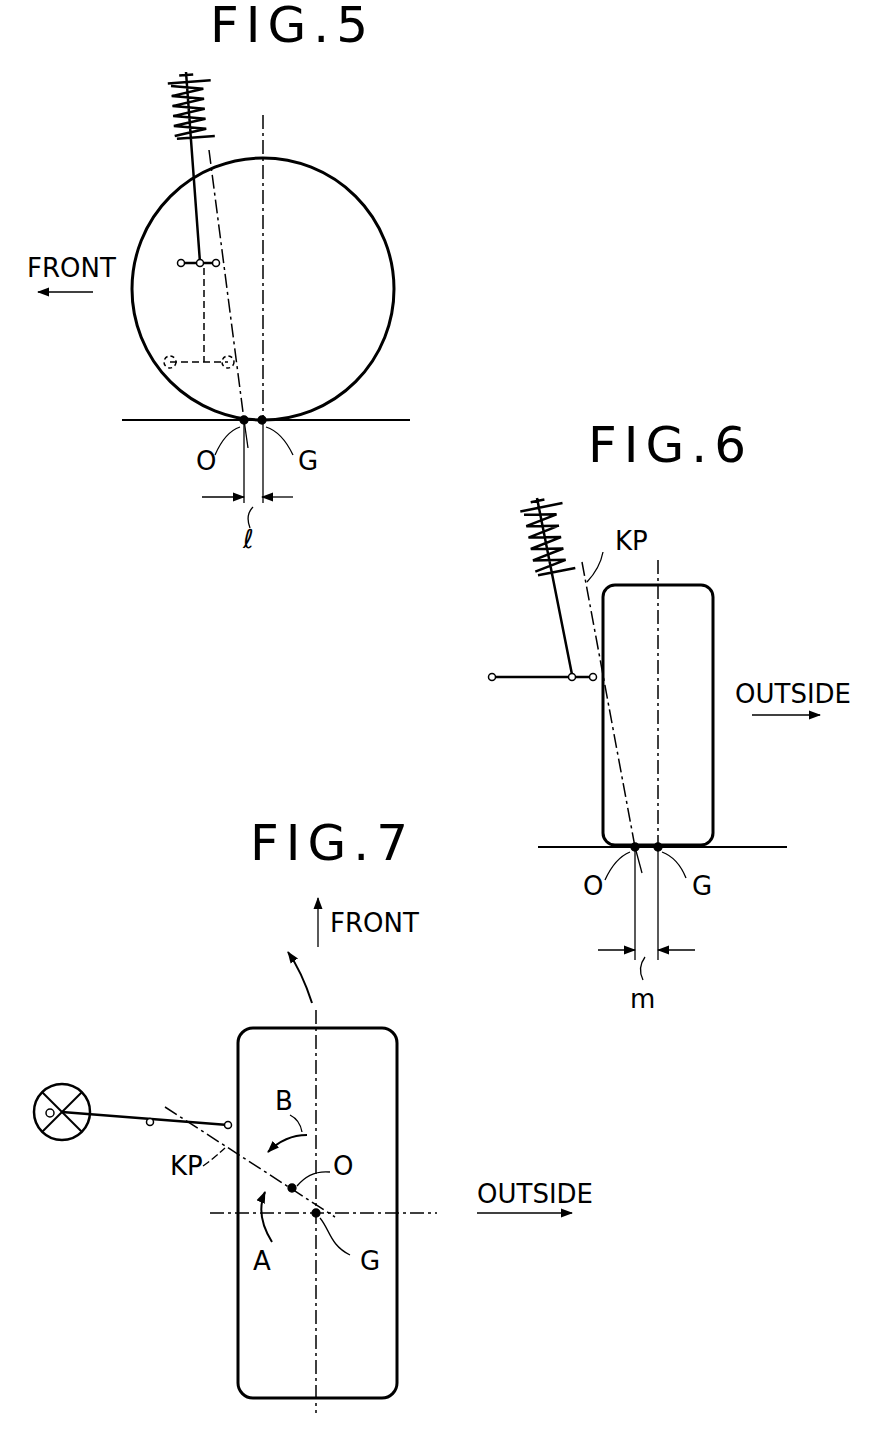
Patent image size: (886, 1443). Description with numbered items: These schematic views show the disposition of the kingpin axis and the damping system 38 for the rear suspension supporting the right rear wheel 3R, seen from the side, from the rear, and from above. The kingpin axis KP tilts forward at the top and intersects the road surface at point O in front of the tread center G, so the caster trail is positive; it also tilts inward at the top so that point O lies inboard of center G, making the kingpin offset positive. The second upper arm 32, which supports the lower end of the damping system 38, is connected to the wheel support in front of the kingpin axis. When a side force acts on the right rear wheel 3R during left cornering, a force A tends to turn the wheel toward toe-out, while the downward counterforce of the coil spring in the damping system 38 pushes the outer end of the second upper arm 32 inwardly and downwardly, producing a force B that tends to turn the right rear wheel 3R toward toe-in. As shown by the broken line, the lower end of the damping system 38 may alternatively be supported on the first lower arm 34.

In FIG. 5, the right rear wheel 3R is at (362, 210).
In FIG. 6, the right rear wheel 3R is at (717, 625).
In FIG. 7, the right rear wheel 3R is at (398, 1078).
In FIG. 5, the second upper arm 32 is at (192, 258).
In FIG. 6, the second upper arm 32 is at (533, 683).
In FIG. 7, the second upper arm 32 is at (212, 1120).
In FIG. 5, the first lower arm 34 is at (168, 384).
In FIG. 5, the damping system 38 is at (160, 122).
In FIG. 6, the damping system 38 is at (520, 555).
In FIG. 7, the damping system 38 is at (80, 1148).